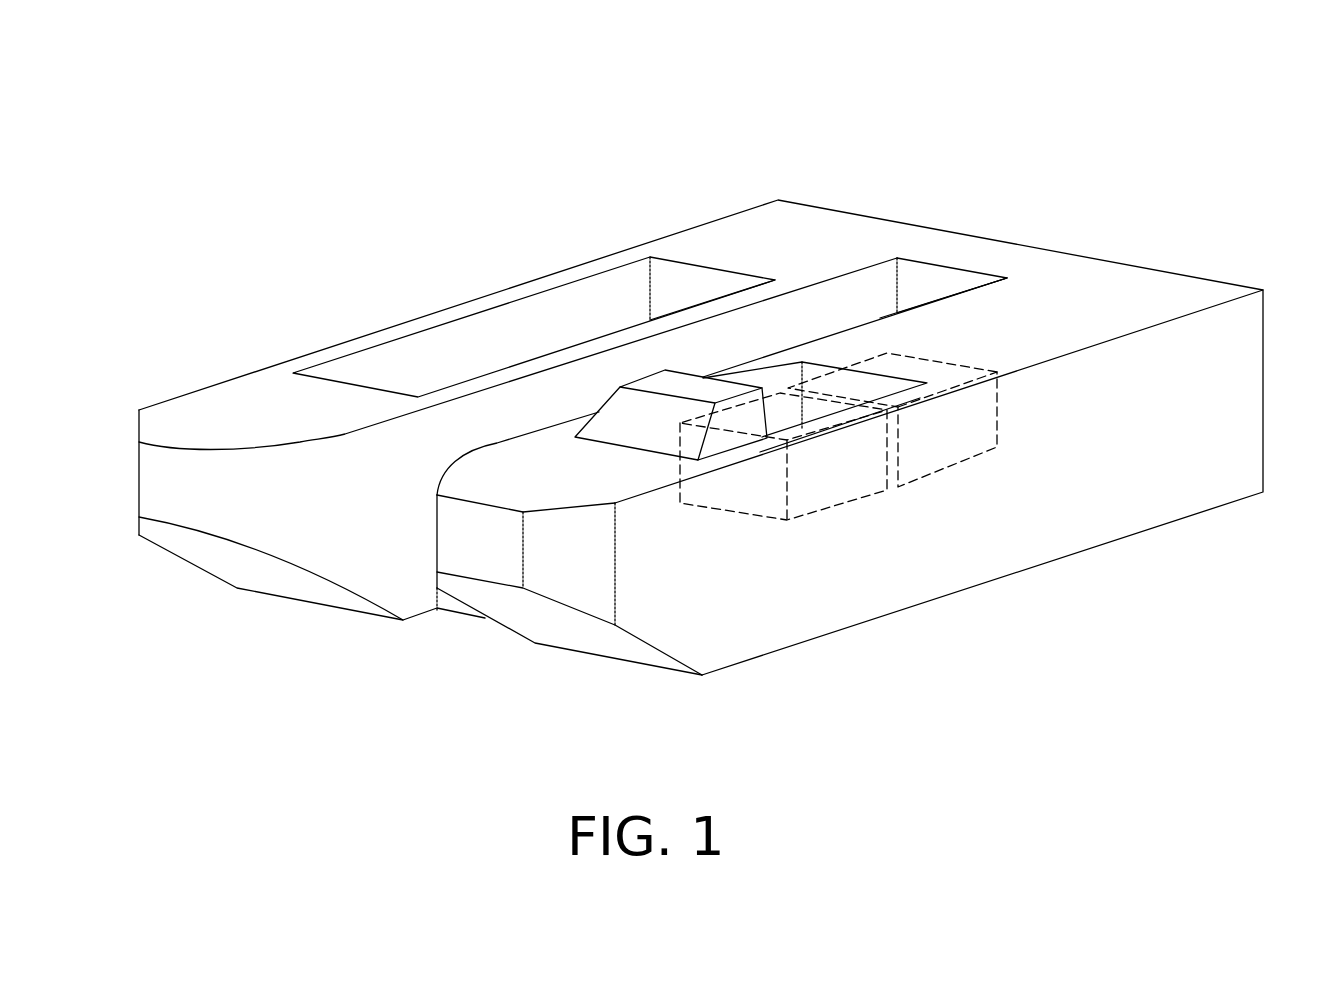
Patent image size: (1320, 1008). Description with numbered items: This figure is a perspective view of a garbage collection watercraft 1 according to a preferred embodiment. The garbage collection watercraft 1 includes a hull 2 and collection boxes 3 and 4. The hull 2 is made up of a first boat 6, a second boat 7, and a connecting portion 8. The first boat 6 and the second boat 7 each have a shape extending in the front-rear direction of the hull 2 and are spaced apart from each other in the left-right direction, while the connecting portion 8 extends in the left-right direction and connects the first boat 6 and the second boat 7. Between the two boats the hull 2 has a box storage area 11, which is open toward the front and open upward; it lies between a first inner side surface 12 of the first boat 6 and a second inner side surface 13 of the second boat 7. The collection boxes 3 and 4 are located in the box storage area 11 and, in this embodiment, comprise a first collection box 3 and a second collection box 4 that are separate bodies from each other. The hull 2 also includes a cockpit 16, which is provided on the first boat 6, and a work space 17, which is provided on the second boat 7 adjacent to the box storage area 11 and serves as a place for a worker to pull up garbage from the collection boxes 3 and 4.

The garbage collection watercraft 1 is at (383, 166).
The hull 2 is at (555, 231).
The first collection box 3 is at (860, 500).
The second collection box 4 is at (968, 462).
The first boat 6 is at (762, 602).
The second boat 7 is at (258, 397).
The connecting portion 8 is at (965, 255).
The box storage area 11 is at (822, 307).
The first inner side surface 12 is at (924, 308).
The second inner side surface 13 is at (857, 293).
The cockpit 16 is at (772, 383).
The work space 17 is at (458, 345).